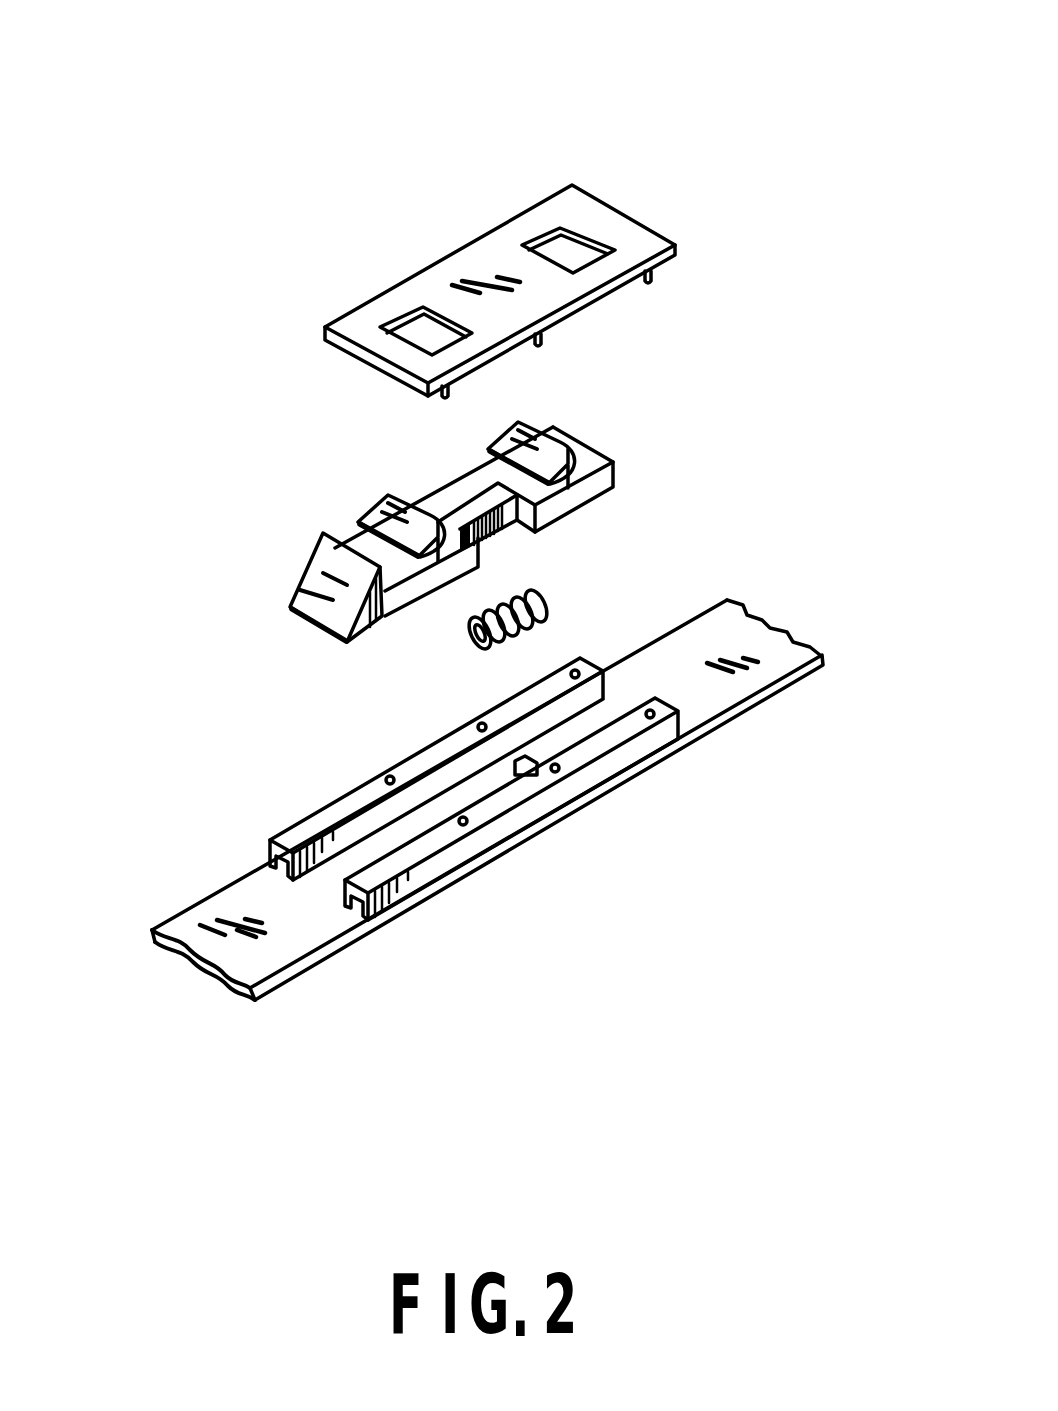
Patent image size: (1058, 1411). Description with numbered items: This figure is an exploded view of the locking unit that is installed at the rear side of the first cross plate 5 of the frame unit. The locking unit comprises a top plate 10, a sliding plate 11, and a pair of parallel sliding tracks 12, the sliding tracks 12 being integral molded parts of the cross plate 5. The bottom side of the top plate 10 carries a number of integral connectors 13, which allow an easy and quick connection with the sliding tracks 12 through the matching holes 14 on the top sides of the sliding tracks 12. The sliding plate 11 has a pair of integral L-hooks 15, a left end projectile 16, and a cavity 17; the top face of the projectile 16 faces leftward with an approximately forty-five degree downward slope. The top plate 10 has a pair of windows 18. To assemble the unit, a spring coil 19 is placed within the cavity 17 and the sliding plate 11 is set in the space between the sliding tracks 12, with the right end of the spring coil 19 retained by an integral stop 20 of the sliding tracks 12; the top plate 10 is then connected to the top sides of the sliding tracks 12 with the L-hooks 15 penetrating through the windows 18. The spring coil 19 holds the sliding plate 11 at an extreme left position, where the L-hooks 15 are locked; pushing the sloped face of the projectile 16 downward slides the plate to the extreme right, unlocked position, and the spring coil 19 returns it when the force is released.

The first cross plate 5 is at (263, 905).
The top plate 10 is at (380, 293).
The sliding plate 11 is at (445, 497).
The sliding tracks 12 is at (320, 810).
The integral connectors 13 is at (649, 279).
The matching holes 14 is at (382, 775).
The L-hooks 15 is at (363, 517).
The left end projectile 16 is at (320, 585).
The cavity 17 is at (497, 517).
The windows 18 is at (417, 305).
The spring coil 19 is at (553, 600).
The integral stop 20 is at (533, 760).